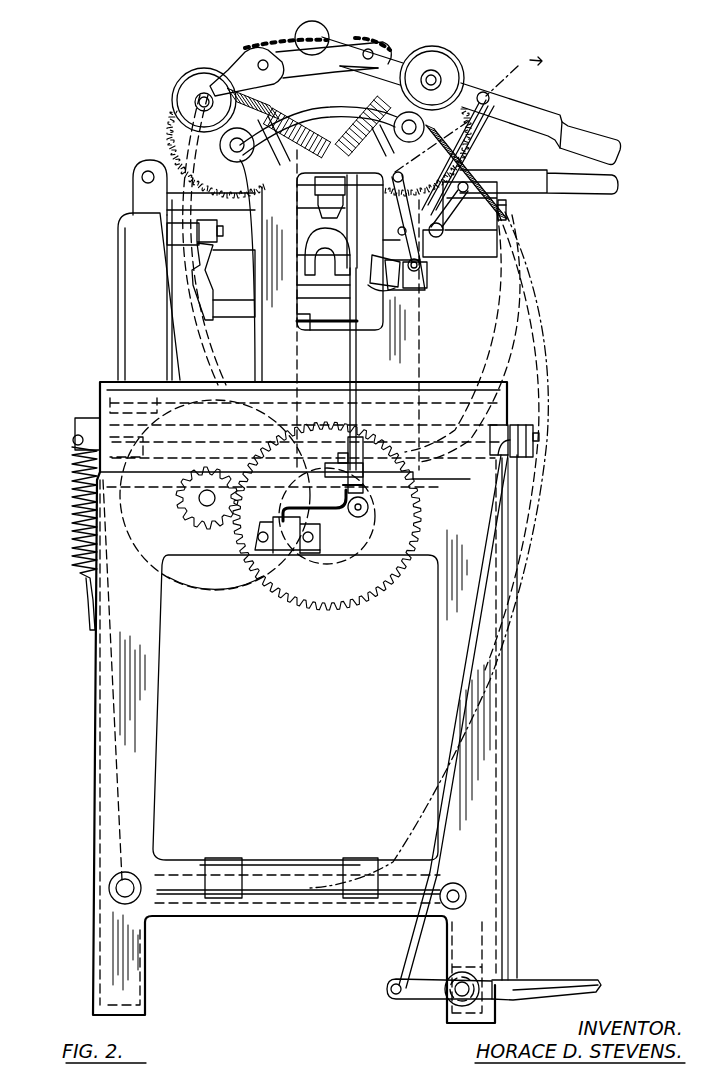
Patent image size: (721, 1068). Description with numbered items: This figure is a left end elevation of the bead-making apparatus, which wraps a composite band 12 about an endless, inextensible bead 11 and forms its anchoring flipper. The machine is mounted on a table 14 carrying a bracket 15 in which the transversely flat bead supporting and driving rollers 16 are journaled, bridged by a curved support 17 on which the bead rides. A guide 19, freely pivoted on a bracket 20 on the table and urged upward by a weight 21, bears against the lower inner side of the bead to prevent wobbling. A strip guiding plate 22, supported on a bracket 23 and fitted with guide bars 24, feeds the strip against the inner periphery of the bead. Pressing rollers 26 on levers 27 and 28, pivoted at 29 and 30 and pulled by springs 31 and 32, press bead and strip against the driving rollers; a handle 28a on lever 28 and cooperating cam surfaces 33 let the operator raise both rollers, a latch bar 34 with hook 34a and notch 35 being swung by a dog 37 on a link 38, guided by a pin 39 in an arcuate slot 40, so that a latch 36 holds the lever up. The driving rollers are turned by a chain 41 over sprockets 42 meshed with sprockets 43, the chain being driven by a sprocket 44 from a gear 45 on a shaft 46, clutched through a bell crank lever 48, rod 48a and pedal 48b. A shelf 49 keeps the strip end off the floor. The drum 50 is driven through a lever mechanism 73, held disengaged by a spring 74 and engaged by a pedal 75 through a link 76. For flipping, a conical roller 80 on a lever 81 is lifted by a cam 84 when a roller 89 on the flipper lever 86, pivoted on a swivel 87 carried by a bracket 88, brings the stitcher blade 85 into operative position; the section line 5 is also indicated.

The section line 5 is at (468, 109).
The bead 11 is at (500, 338).
The composite band 12 is at (542, 395).
The table 14 is at (445, 665).
The bracket 15 is at (418, 335).
The bead supporting and driving rollers 16 is at (420, 68).
The curved support 17 is at (325, 110).
The guide 19 is at (363, 455).
The bracket 20 is at (280, 513).
The weight 21 is at (368, 513).
The strip guiding plate 22 is at (506, 206).
The bracket 23 is at (450, 205).
The guide bars 24 is at (510, 216).
The rollers 26 is at (200, 70).
The lever 27 is at (238, 72).
The lever 28 is at (522, 108).
The handle 28a is at (590, 138).
The pivot 29 is at (263, 60).
The pivot 30 is at (369, 49).
The spring 31 is at (270, 140).
The spring 32 is at (362, 92).
The cam surfaces 33 is at (318, 30).
The latch bar 34 is at (470, 135).
The hook 34a is at (390, 292).
The notch 35 is at (398, 233).
The latch 36 is at (393, 190).
The dog 37 is at (430, 275).
The link 38 is at (425, 235).
The pin 39 is at (408, 275).
The arcuate slot 40 is at (422, 288).
The chain 41 is at (355, 302).
The sprockets 42 is at (258, 50).
The sprockets 43 is at (190, 142).
The sprocket 44 is at (332, 517).
The gear 45 is at (381, 582).
The shaft 46 is at (325, 517).
The bell crank lever 48 is at (506, 430).
The rod 48a is at (465, 698).
The pedal 48b is at (418, 992).
The shelf 49 is at (265, 895).
The drum 50 is at (482, 255).
The lever mechanism 73 is at (538, 432).
The spring 74 is at (72, 498).
The pedal 75 is at (602, 986).
The link 76 is at (512, 668).
The conical roller 80 is at (310, 250).
The lever 81 is at (228, 310).
The cam 84 is at (205, 275).
The blade 85 is at (331, 197).
The lever 86 is at (522, 178).
The swivel 87 is at (133, 186).
The bracket 88 is at (125, 250).
The roller 89 is at (216, 228).